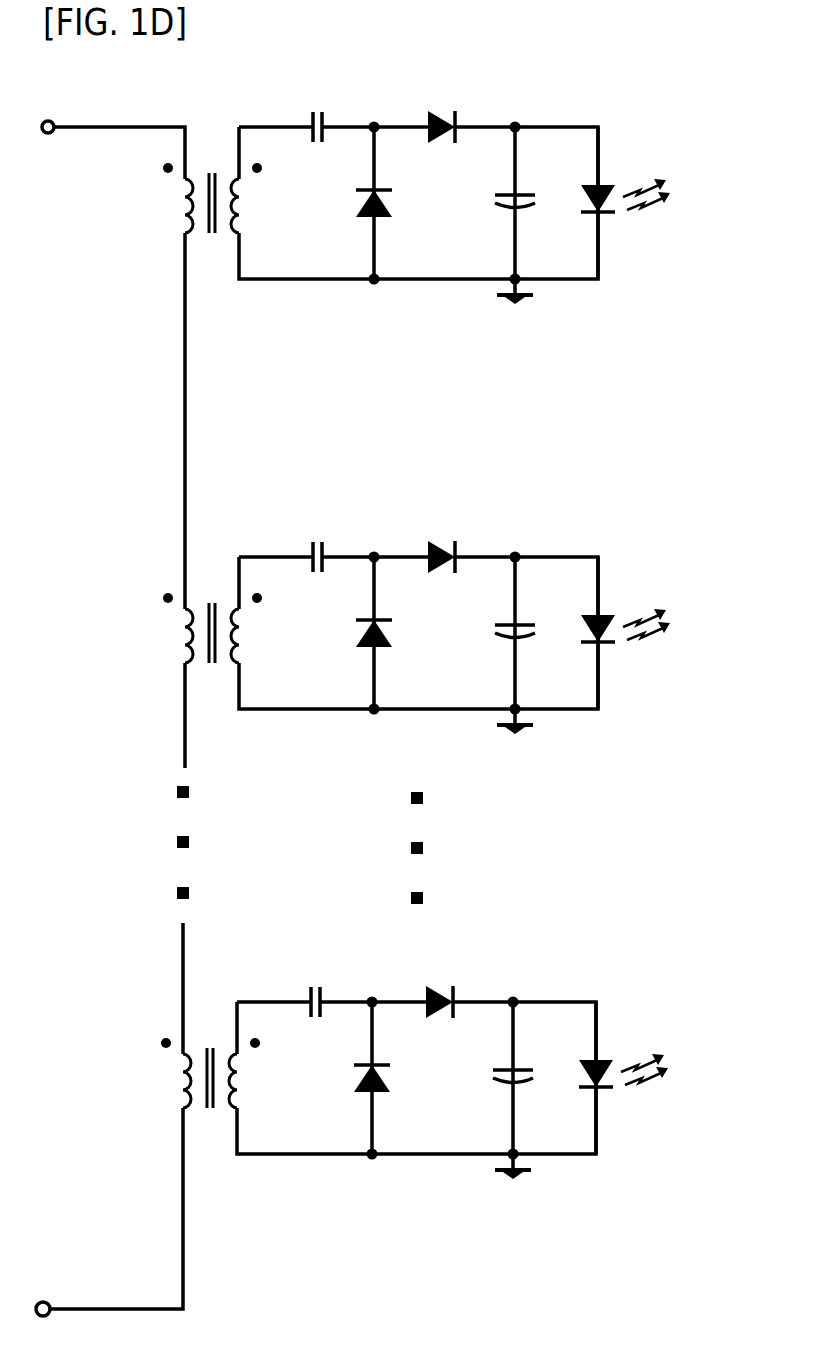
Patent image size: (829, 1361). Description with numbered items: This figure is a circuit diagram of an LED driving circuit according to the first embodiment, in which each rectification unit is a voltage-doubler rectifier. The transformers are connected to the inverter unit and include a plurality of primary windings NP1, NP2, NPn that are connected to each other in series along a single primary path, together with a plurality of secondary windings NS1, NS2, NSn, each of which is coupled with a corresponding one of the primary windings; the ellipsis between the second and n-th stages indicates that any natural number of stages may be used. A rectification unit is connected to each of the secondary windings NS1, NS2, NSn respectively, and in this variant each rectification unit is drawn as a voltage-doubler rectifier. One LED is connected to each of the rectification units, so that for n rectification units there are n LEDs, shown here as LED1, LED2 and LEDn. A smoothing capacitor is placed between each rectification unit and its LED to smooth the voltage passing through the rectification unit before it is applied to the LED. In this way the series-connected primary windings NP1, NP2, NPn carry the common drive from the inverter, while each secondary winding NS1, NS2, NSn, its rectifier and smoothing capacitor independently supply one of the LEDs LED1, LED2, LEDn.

The primary winding NP1 is at (150, 198).
The secondary winding NS1 is at (278, 198).
The primary winding NP2 is at (150, 628).
The secondary winding NS2 is at (278, 628).
The primary winding NPn is at (148, 1073).
The secondary winding NSn is at (276, 1073).
The LED LED1 is at (643, 203).
The LED LED2 is at (643, 633).
The LED LEDn is at (641, 1078).